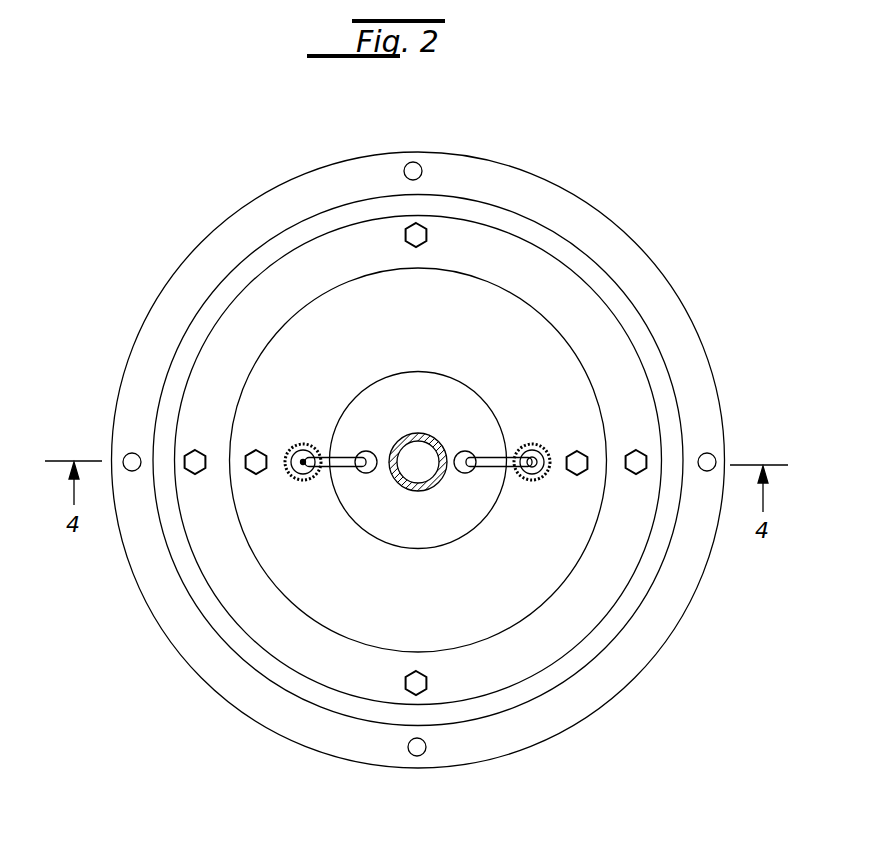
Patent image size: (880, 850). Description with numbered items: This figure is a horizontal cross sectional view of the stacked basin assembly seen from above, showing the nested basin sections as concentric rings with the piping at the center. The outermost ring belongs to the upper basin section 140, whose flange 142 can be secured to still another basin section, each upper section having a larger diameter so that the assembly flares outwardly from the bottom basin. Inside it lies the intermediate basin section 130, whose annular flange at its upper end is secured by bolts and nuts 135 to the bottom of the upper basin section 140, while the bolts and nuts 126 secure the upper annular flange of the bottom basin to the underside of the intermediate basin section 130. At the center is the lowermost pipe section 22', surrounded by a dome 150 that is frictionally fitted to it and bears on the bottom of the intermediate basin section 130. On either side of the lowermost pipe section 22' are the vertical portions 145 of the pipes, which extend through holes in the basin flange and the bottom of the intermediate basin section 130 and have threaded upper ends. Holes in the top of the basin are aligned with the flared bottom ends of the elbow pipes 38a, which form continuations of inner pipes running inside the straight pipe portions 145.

The lowermost pipe section 22' is at (419, 443).
The elbow pipes 38a is at (352, 472).
The bolts and nuts 126 is at (577, 453).
The intermediate basin section 130 is at (573, 533).
The nuts 135 is at (190, 467).
The upper basin section 140 is at (672, 436).
The flange 142 is at (705, 412).
The vertical portions of pipes 145 is at (544, 474).
The dome 150 is at (416, 522).